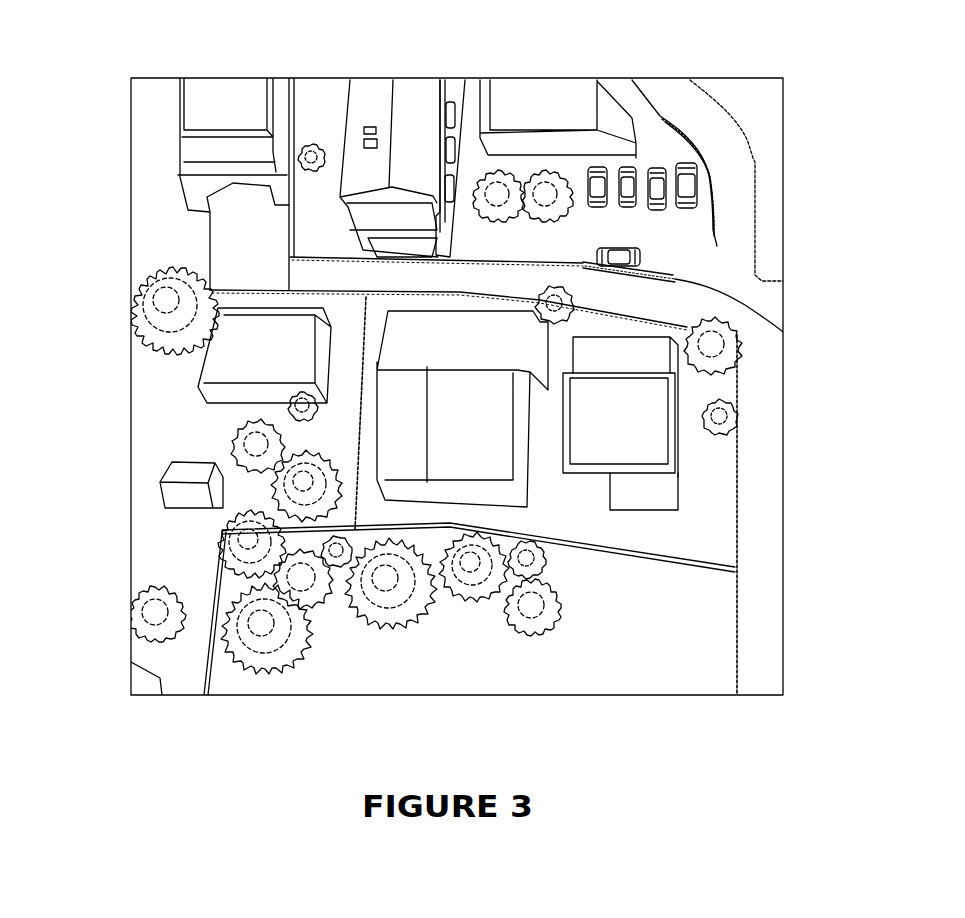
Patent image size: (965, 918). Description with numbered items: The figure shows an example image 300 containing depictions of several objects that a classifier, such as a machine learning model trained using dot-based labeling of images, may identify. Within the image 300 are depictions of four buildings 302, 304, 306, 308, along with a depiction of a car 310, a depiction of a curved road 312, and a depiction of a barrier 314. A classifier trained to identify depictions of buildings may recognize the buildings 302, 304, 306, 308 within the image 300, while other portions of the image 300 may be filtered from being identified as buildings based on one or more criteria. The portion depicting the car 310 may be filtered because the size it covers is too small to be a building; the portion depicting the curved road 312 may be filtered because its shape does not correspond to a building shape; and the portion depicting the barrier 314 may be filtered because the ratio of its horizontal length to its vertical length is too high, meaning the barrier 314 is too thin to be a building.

The image 300 is at (807, 64).
The building 302 is at (200, 388).
The building 304 is at (467, 453).
The building 306 is at (632, 407).
The building 308 is at (397, 107).
The car 310 is at (697, 181).
The curved road 312 is at (743, 213).
The barrier 314 is at (783, 332).